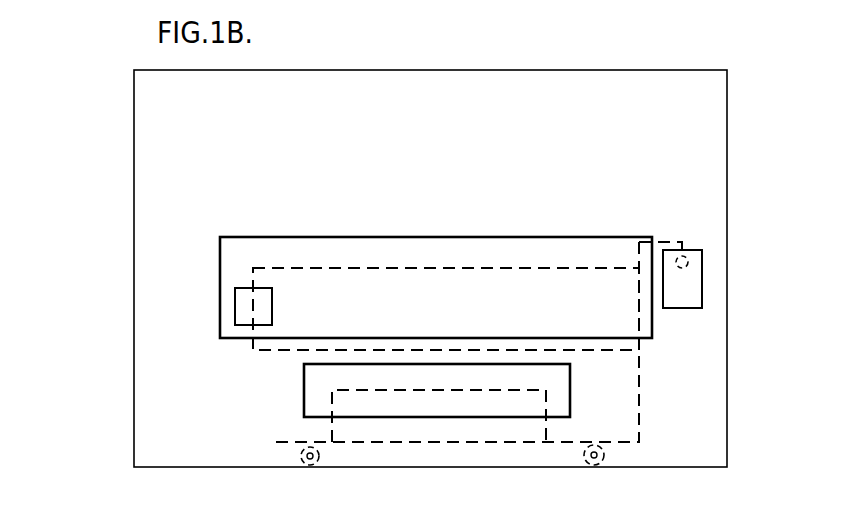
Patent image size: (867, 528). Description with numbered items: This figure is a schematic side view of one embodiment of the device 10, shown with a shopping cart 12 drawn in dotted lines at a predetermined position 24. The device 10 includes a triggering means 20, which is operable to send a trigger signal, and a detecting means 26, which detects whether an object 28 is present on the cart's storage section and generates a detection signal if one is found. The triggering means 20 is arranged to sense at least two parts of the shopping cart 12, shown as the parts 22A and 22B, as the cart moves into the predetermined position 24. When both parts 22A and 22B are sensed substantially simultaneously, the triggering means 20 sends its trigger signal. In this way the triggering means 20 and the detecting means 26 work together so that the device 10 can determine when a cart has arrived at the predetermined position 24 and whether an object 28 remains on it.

The device 10 is at (98, 94).
The shopping cart 12 is at (481, 250).
The triggering means 20 is at (205, 266).
The part of the shopping cart 22A is at (714, 262).
The part of the shopping cart 22B is at (283, 314).
The predetermined position 24 is at (650, 455).
The detecting means 26 is at (288, 390).
The object 28 is at (467, 434).